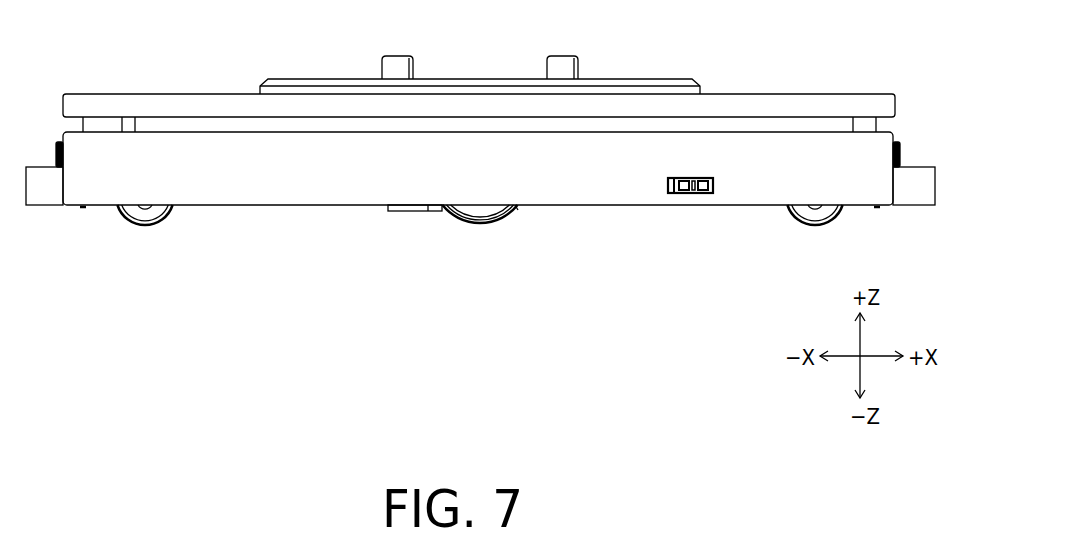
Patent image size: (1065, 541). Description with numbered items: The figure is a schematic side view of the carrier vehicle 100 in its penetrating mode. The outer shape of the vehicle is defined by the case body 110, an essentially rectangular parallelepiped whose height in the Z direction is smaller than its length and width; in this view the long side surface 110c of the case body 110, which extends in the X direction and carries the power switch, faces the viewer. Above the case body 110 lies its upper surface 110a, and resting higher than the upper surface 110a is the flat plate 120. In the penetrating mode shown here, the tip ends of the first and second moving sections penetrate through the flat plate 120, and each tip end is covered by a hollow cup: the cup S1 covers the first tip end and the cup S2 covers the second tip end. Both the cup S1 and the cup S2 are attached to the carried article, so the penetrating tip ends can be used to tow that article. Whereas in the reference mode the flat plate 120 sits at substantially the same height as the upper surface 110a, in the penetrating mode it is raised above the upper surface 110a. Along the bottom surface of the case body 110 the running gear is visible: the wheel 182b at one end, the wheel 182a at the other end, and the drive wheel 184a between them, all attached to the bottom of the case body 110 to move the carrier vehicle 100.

The carrier vehicle 100 is at (796, 70).
The case body 110 is at (136, 86).
The upper surface 110a is at (200, 93).
The side surface 110c is at (275, 185).
The flat plate 120 is at (305, 79).
The cup S1 is at (403, 70).
The cup S2 is at (573, 70).
The wheel 182a is at (798, 218).
The wheel 182b is at (143, 225).
The drive wheel 184a is at (480, 218).